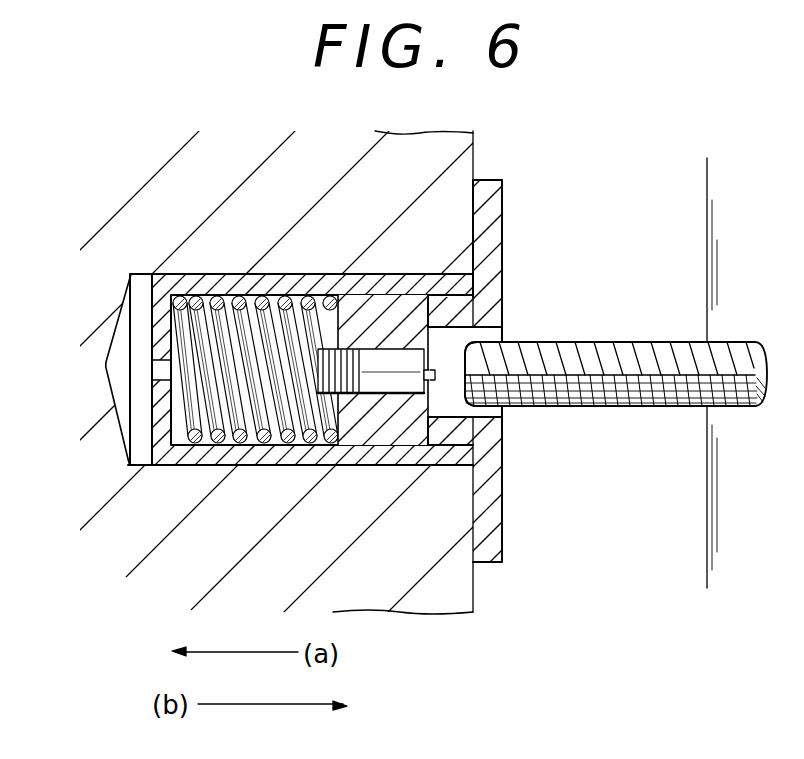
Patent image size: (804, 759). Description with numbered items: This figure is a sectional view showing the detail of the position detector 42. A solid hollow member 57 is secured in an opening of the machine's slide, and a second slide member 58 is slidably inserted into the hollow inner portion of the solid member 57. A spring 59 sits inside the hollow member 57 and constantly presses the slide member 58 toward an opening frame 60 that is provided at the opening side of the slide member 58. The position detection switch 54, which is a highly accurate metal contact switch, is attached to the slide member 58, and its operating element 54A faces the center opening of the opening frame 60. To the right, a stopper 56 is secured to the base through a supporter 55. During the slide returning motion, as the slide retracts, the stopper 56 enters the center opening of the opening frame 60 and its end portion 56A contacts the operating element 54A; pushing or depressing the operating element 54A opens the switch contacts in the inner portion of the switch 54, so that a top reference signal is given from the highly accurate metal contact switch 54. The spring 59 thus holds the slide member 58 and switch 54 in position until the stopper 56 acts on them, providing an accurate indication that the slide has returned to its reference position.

The position detector 42 is at (503, 283).
The position detection switch 54 is at (396, 382).
The operating element 54A is at (431, 366).
The supporter 55 is at (707, 284).
The stopper 56 is at (635, 342).
The end portion of the stopper 56A is at (466, 404).
The solid hollow member 57 is at (230, 283).
The slide member 58 is at (395, 315).
The spring 59 is at (308, 300).
The opening frame 60 is at (495, 307).